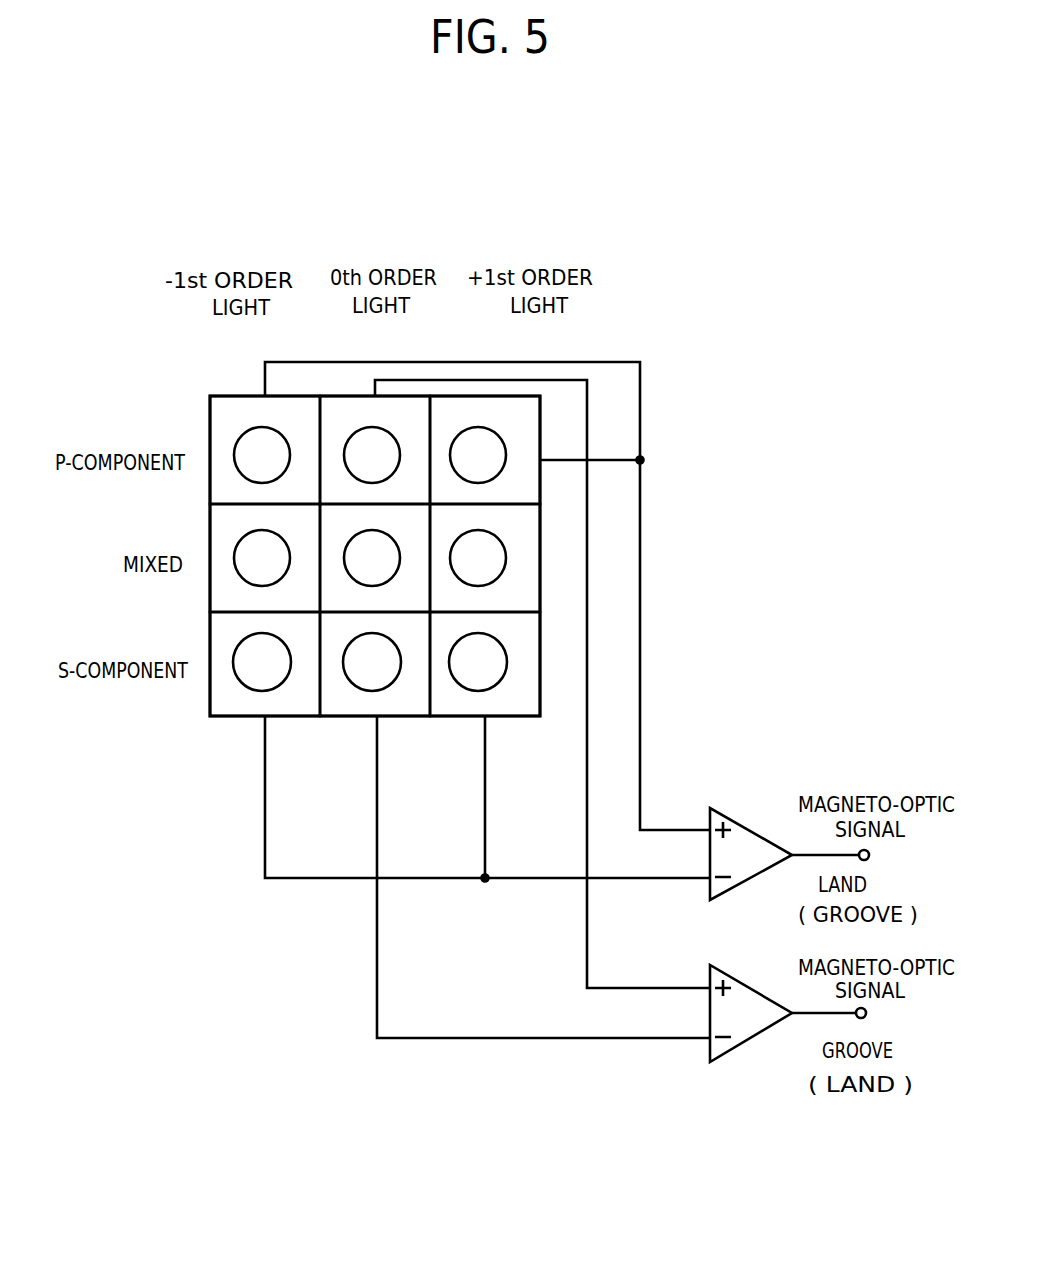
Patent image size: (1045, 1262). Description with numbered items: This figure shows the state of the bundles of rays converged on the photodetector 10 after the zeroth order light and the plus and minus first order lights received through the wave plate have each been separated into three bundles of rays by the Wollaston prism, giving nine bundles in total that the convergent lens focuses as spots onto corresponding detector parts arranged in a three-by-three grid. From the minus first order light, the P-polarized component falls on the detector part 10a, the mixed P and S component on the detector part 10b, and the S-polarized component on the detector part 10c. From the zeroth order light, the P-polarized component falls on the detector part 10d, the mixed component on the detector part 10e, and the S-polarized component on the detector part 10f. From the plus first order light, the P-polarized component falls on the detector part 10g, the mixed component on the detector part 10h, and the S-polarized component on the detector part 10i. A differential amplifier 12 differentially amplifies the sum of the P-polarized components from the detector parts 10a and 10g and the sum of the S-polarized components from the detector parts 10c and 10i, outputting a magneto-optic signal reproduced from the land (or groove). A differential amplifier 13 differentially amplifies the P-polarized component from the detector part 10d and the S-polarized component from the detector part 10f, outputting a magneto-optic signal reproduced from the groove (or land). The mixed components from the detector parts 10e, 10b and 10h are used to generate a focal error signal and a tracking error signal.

The photodetector 10 is at (222, 728).
The detector part 10a is at (222, 425).
The detector part 10b is at (222, 540).
The detector part 10c is at (222, 644).
The detector part 10d is at (342, 407).
The detector part 10e is at (338, 595).
The detector part 10f is at (352, 703).
The detector part 10g is at (530, 432).
The detector part 10h is at (530, 548).
The detector part 10i is at (523, 703).
The differential amplifier 12 is at (750, 836).
The differential amplifier 13 is at (757, 1011).